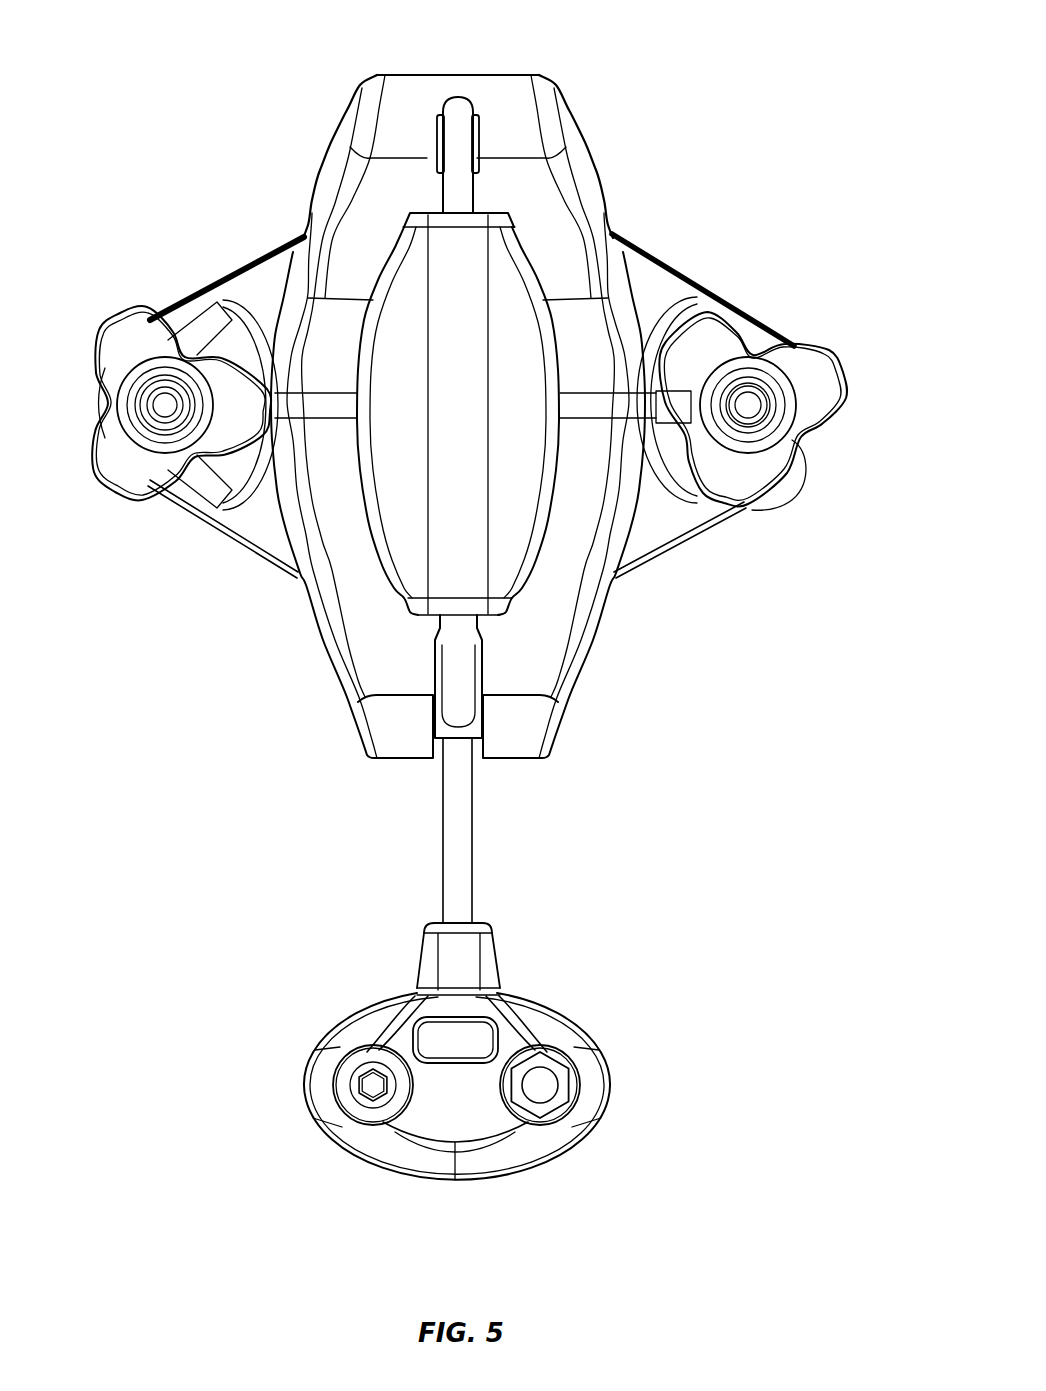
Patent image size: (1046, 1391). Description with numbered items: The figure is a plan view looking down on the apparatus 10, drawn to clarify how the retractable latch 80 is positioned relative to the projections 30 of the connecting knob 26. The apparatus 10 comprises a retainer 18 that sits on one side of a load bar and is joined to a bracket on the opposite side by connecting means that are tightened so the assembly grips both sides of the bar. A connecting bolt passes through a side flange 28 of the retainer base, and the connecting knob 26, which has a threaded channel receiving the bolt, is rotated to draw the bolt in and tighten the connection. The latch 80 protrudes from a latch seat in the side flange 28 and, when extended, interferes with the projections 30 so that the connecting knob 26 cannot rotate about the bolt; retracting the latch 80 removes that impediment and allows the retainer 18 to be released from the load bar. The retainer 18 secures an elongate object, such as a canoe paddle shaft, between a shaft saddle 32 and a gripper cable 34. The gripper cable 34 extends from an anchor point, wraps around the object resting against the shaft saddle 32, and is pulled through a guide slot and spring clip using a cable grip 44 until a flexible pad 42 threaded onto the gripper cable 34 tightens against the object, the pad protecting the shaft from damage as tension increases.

The apparatus 10 is at (146, 176).
The retainer 18 is at (634, 692).
The connecting knob 26 is at (758, 380).
The side flange 28 is at (668, 305).
The projections 30 is at (822, 382).
The shaft saddle 32 is at (343, 572).
The gripper cable 34 is at (458, 128).
The flexible pad 42 is at (507, 283).
The cable grip 44 is at (433, 1117).
The latch 80 is at (676, 414).